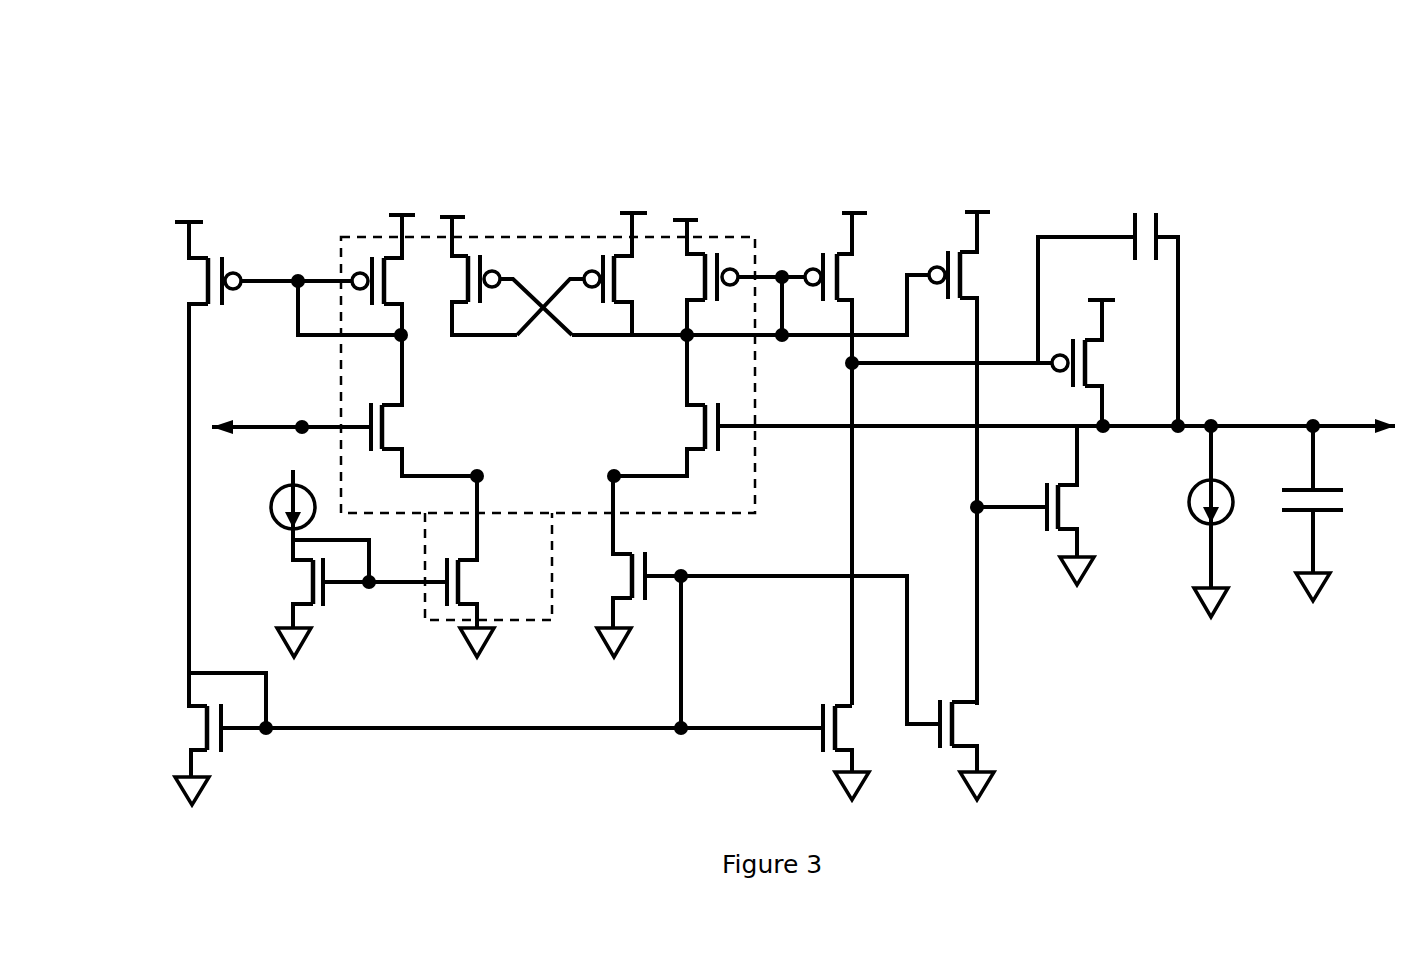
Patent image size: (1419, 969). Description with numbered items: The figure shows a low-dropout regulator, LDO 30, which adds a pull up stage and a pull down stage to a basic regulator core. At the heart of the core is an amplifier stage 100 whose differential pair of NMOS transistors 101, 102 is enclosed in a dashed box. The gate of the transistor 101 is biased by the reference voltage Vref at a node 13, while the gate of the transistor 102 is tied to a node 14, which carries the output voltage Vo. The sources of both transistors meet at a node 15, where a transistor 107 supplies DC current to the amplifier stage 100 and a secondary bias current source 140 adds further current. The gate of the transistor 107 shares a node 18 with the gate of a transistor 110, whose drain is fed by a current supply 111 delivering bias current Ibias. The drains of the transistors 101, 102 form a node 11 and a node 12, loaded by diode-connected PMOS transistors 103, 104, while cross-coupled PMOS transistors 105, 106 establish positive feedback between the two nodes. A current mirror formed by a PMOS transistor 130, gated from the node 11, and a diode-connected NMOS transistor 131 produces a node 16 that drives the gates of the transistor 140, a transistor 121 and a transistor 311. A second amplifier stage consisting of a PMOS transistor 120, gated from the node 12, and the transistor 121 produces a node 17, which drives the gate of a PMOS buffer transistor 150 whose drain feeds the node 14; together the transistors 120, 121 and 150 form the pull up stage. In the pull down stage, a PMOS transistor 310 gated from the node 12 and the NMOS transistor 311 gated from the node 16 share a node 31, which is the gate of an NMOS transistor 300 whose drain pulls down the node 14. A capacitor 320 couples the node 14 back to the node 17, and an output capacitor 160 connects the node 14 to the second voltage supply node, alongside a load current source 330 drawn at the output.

The LDO 30 is at (757, 431).
The amplifier stage 100 is at (532, 179).
The transistor 101 is at (414, 415).
The transistor 102 is at (679, 410).
The transistor 103 is at (370, 241).
The transistor 104 is at (710, 244).
The transistor 105 is at (470, 249).
The transistor 106 is at (620, 246).
The transistor 107 is at (491, 565).
The transistor 110 is at (282, 586).
The current supply 111 is at (272, 486).
The transistor 120 is at (869, 265).
The transistor 121 is at (828, 699).
The transistor 130 is at (173, 262).
The transistor 131 is at (176, 700).
The secondary bias current source 140 is at (640, 559).
The transistor 150 is at (1106, 350).
The capacitor 160 is at (1274, 500).
The transistor 300 is at (1052, 546).
The transistor 310 is at (996, 262).
The transistor 311 is at (988, 704).
The capacitor 320 is at (1133, 206).
The load current source 330 is at (1179, 502).
The node 11 is at (298, 273).
The node 12 is at (783, 264).
The node 13 is at (303, 417).
The node 14 is at (1212, 409).
The node 15 is at (482, 467).
The node 16 is at (272, 719).
The node 17 is at (839, 363).
The node 18 is at (372, 597).
The node 31 is at (964, 510).